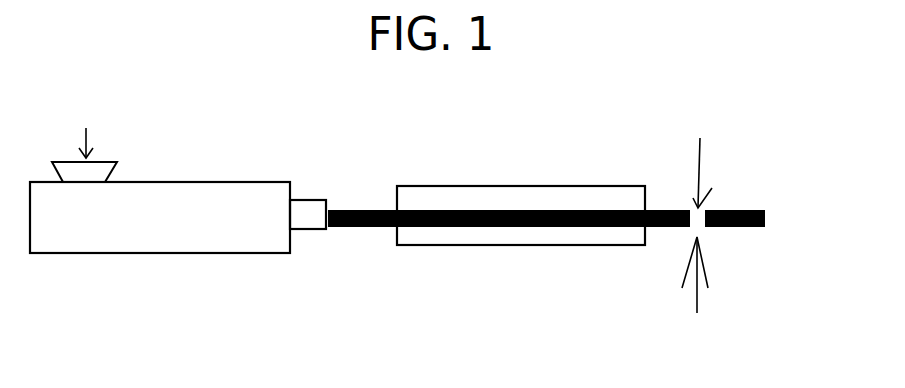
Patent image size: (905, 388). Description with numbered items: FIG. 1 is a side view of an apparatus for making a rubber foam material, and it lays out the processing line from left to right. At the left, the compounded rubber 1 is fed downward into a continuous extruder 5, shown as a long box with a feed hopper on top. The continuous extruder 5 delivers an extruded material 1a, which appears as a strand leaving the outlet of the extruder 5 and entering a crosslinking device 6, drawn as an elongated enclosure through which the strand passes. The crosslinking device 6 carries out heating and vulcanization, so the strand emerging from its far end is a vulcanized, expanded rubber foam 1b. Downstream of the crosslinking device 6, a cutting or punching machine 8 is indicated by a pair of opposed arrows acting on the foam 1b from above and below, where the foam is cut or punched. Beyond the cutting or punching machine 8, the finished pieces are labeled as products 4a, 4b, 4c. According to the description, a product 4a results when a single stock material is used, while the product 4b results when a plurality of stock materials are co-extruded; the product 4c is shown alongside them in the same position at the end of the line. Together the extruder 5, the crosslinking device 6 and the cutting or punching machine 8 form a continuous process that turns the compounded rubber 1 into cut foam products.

The compounded rubber 1 is at (84, 141).
The extruded material 1a is at (355, 210).
The vulcanized, expanded rubber foam 1b is at (663, 203).
The product 4a is at (779, 191).
The product 4b is at (735, 218).
The pellet 4c is at (743, 210).
The continuous extruder 5 is at (148, 235).
The crosslinking device 6 is at (497, 233).
The cutting or punching machine 8 is at (697, 224).